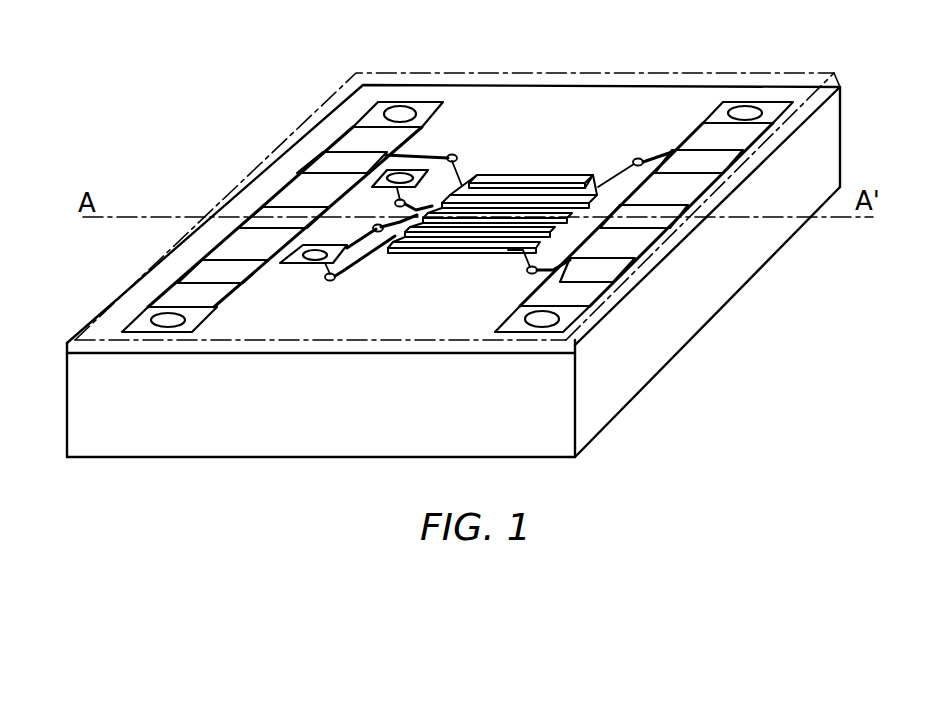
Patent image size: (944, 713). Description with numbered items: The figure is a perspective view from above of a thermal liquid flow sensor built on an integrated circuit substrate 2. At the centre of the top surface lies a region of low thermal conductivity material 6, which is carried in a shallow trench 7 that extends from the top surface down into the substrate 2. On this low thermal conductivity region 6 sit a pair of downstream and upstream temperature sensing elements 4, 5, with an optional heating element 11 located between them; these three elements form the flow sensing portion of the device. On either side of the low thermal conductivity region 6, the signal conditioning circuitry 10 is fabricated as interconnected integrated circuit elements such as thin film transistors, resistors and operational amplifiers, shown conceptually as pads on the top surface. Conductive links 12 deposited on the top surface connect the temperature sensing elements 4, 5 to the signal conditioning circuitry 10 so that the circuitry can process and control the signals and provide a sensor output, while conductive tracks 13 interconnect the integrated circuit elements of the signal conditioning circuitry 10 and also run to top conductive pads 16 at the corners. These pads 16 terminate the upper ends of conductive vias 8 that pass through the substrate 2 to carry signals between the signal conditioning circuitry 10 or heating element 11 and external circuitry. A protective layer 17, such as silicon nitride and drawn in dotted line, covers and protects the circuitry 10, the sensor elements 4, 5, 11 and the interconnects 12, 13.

The integrated circuit substrate 2 is at (88, 414).
The temperature sensing element 4 is at (527, 176).
The temperature sensing element 5 is at (462, 254).
The low thermal conductivity region 6 is at (557, 176).
The trench 7 is at (426, 255).
The conductive vias 8 is at (403, 108).
The signal conditioning circuitry 10 is at (296, 162).
The heating element 11 is at (548, 226).
The conductive links 12 is at (430, 156).
The conductive tracks 13 is at (318, 124).
The top conductive pads 16 is at (345, 106).
The protective layer 17 is at (836, 75).